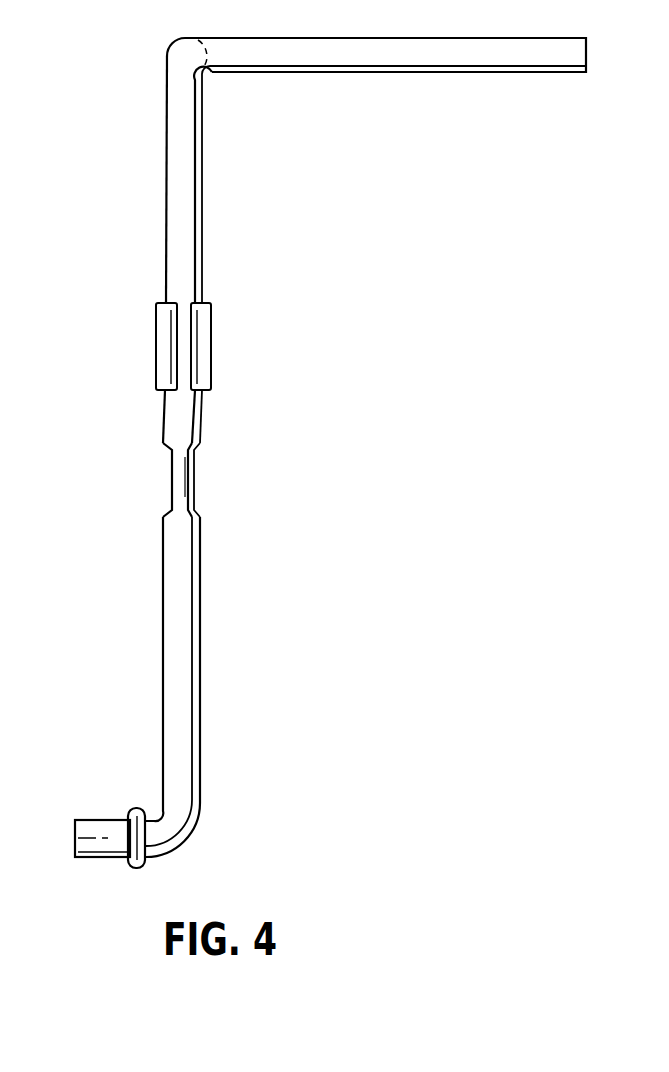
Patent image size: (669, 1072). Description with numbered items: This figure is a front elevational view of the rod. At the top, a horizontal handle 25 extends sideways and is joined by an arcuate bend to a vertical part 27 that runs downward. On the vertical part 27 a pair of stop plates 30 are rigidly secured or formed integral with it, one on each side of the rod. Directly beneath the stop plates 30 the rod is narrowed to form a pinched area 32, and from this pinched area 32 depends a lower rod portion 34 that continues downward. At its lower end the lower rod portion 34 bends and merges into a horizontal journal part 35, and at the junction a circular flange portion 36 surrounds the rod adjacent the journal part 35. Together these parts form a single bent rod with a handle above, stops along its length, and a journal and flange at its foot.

The horizontal handle 25 is at (500, 75).
The vertical part 27 is at (166, 240).
The stop plates 30 is at (157, 357).
The pinched area 32 is at (207, 478).
The lower rod portion 34 is at (202, 583).
The horizontal journal part 35 is at (100, 858).
The circular flange portion 36 is at (133, 808).